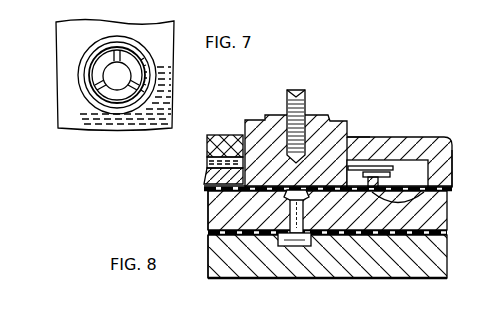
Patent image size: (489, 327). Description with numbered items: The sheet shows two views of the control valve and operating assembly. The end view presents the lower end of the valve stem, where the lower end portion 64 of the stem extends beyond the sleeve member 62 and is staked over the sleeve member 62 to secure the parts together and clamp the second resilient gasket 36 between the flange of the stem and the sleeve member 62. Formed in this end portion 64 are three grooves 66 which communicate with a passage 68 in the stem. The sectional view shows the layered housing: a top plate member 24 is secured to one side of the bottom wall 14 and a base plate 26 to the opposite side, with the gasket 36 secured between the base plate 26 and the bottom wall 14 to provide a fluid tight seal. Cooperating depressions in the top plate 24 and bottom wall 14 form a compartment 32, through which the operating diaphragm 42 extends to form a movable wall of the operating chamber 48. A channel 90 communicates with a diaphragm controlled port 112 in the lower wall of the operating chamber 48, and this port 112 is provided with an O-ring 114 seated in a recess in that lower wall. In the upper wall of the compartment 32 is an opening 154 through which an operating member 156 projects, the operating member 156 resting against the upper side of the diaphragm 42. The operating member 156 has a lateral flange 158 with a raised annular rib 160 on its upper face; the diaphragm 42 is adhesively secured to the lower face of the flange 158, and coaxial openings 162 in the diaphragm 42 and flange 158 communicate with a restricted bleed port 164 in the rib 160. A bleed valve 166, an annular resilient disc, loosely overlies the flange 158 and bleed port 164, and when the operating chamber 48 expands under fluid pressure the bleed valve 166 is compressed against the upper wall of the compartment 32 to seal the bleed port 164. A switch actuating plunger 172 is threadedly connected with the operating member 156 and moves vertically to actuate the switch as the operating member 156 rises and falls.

In FIG. 7, the sleeve member 62 is at (97, 46).
In FIG. 7, the lower end portion of stem 64 is at (90, 69).
In FIG. 7, the grooves 66 is at (97, 87).
In FIG. 7, the passage 68 is at (119, 80).
In FIG. 7, the second resilient gasket 36 is at (166, 54).
In FIG. 8, the second resilient gasket 36 is at (448, 250).
In FIG. 8, the switch actuating plunger 172 is at (300, 98).
In FIG. 8, the operating member 156 is at (348, 132).
In FIG. 8, the opening 154 is at (354, 139).
In FIG. 8, the bleed valve 166 is at (386, 166).
In FIG. 8, the compartment 32 is at (414, 160).
In FIG. 8, the top plate member 24 is at (451, 152).
In FIG. 8, the raised annular rib 160 is at (222, 140).
In FIG. 8, the lateral flange 158 is at (207, 163).
In FIG. 8, the operating diaphragm 42 is at (205, 179).
In FIG. 8, the operating chamber 48 is at (207, 198).
In FIG. 8, the bottom wall 14 is at (432, 222).
In FIG. 8, the coaxial openings 162 is at (405, 200).
In FIG. 8, the restricted bleed port 164 is at (392, 183).
In FIG. 8, the base plate 26 is at (213, 278).
In FIG. 8, the O-ring 114 is at (288, 199).
In FIG. 8, the diaphragm controlled port 112 is at (297, 228).
In FIG. 8, the channel 90 is at (310, 247).